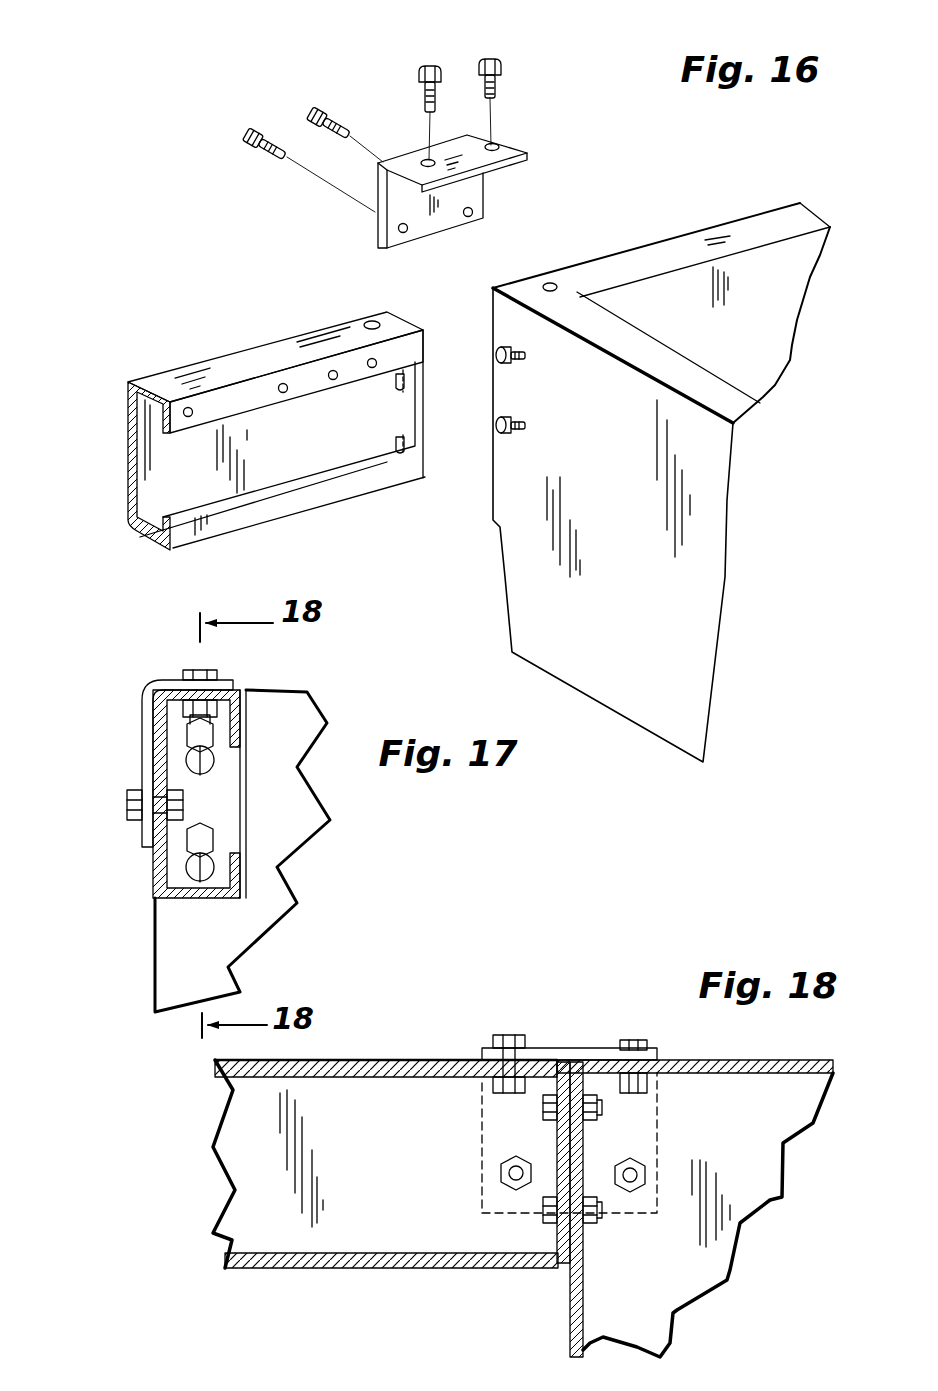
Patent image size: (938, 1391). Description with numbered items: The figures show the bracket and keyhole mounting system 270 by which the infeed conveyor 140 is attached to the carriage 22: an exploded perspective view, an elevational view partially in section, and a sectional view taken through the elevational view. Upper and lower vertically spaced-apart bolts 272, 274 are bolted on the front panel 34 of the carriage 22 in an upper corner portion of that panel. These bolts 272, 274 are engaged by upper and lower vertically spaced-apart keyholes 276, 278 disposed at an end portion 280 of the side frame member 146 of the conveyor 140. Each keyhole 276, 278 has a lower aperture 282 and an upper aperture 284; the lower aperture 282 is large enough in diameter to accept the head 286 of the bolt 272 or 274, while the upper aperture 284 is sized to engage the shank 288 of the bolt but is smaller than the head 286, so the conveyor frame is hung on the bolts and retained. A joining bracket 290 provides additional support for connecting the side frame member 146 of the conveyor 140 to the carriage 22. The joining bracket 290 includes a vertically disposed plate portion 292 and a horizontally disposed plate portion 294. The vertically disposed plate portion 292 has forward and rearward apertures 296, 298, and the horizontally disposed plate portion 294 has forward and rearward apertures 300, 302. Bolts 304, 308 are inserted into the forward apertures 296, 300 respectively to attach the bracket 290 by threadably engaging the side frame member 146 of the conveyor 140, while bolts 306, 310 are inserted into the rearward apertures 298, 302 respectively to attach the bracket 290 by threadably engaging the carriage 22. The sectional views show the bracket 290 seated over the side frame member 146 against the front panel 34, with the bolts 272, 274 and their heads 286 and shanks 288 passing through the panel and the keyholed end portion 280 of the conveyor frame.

In FIG. 16, the carriage 22 is at (644, 245).
In FIG. 17, the carriage 22 is at (150, 970).
In FIG. 18, the carriage 22 is at (778, 1060).
In FIG. 16, the front panel 34 is at (543, 522).
In FIG. 17, the front panel 34 is at (310, 821).
In FIG. 18, the front panel 34 is at (572, 1323).
In FIG. 16, the infeed conveyor 140 is at (245, 345).
In FIG. 17, the infeed conveyor 140 is at (156, 873).
In FIG. 18, the infeed conveyor 140 is at (391, 1151).
In FIG. 16, the side frame member 146 is at (278, 477).
In FIG. 17, the side frame member 146 is at (152, 893).
In FIG. 18, the side frame member 146 is at (367, 1233).
In FIG. 16, the bracket and keyhole mounting system 270 is at (293, 221).
In FIG. 17, the bracket and keyhole mounting system 270 is at (73, 793).
In FIG. 18, the bracket and keyhole mounting system 270 is at (630, 1016).
In FIG. 16, the upper bolt 272 is at (519, 365).
In FIG. 17, the upper bolt 272 is at (176, 728).
In FIG. 18, the upper bolt 272 is at (546, 1072).
In FIG. 16, the lower bolt 274 is at (518, 437).
In FIG. 17, the lower bolt 274 is at (224, 829).
In FIG. 18, the lower bolt 274 is at (540, 1203).
In FIG. 16, the upper keyhole 276 is at (418, 373).
In FIG. 17, the upper keyhole 276 is at (236, 745).
In FIG. 16, the lower keyhole 278 is at (417, 442).
In FIG. 17, the lower keyhole 278 is at (222, 852).
In FIG. 16, the end portion 280 is at (405, 407).
In FIG. 17, the end portion 280 is at (235, 783).
In FIG. 16, the lower aperture 282 is at (387, 380).
In FIG. 17, the lower aperture 282 is at (215, 762).
In FIG. 18, the lower aperture 282 is at (593, 1130).
In FIG. 16, the upper aperture 284 is at (404, 368).
In FIG. 16, the head 286 is at (495, 352).
In FIG. 17, the head 286 is at (238, 718).
In FIG. 18, the head 286 is at (540, 1112).
In FIG. 16, the shank 288 is at (512, 352).
In FIG. 18, the shank 288 is at (573, 1072).
In FIG. 16, the joining bracket 290 is at (476, 176).
In FIG. 17, the joining bracket 290 is at (154, 732).
In FIG. 18, the joining bracket 290 is at (621, 1105).
In FIG. 16, the vertically disposed plate portion 292 is at (486, 187).
In FIG. 17, the vertically disposed plate portion 292 is at (147, 760).
In FIG. 18, the vertically disposed plate portion 292 is at (660, 1100).
In FIG. 16, the horizontally disposed plate portion 294 is at (452, 155).
In FIG. 17, the horizontally disposed plate portion 294 is at (180, 688).
In FIG. 18, the horizontally disposed plate portion 294 is at (600, 1057).
In FIG. 16, the forward aperture 296 is at (404, 236).
In FIG. 16, the rearward aperture 298 is at (474, 213).
In FIG. 16, the forward aperture 300 is at (425, 160).
In FIG. 16, the rearward aperture 302 is at (494, 145).
In FIG. 16, the bolt 304 is at (250, 130).
In FIG. 16, the bolt 306 is at (318, 114).
In FIG. 16, the bolt 308 is at (428, 63).
In FIG. 16, the bolt 310 is at (492, 60).